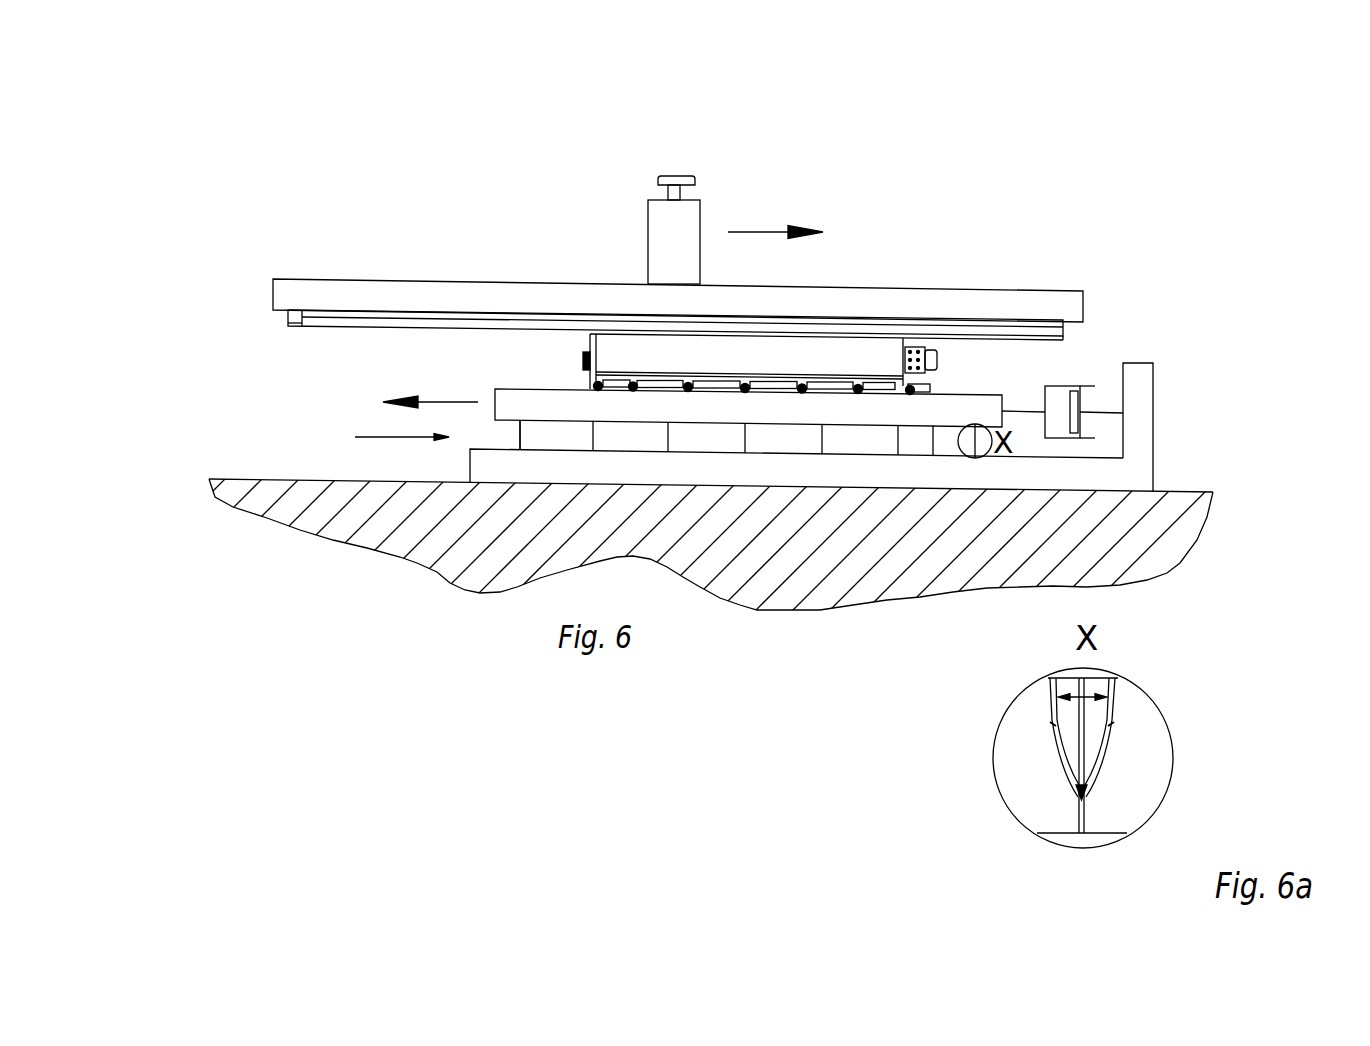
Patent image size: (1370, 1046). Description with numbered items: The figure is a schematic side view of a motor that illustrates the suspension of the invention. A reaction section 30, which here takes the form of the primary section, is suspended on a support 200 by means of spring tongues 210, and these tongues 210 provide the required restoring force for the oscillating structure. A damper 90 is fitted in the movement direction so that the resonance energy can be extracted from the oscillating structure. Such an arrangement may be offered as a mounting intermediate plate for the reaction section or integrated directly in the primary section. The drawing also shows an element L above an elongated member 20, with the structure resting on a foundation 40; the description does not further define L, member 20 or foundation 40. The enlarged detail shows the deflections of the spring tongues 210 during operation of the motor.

In FIG. 6, the tool carriage / load L is at (683, 237).
In FIG. 6, the guide rail 20 is at (930, 303).
In FIG. 6, the reaction section 30 is at (992, 410).
In FIG. 6, the foundation 40 is at (757, 552).
In FIG. 6, the damper 90 is at (1060, 413).
In FIG. 6, the support 200 is at (371, 438).
In FIG. 6, the spring tongues 210 is at (518, 428).
In FIG. 6A, the spring tongues 210 is at (1060, 758).